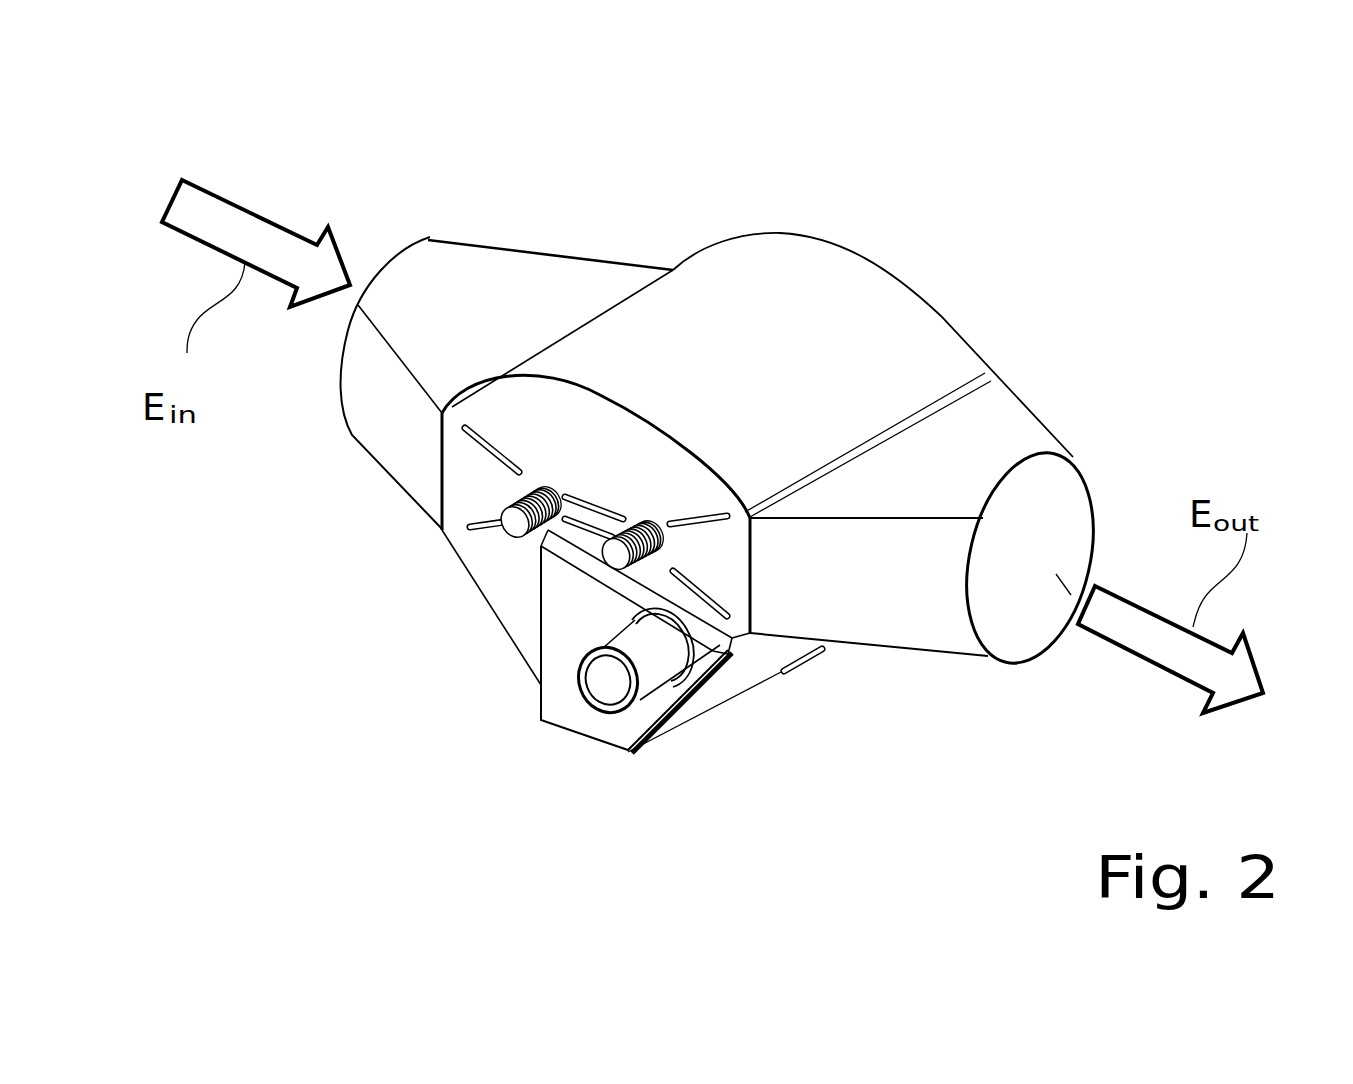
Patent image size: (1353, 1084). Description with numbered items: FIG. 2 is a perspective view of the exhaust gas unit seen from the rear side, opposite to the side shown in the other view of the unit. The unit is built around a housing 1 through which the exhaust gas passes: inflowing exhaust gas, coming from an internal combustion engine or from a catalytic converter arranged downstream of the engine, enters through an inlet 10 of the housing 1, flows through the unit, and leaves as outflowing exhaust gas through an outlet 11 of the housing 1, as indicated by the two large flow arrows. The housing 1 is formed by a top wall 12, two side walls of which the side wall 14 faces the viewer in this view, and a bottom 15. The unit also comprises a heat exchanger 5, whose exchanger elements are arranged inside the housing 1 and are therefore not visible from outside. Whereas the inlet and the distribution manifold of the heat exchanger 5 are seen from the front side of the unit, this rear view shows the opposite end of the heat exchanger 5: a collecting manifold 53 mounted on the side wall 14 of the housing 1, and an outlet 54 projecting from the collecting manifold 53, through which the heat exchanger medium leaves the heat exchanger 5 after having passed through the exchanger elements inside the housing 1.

The housing 1 is at (742, 499).
The inlet 10 is at (433, 290).
The outlet 11 is at (1008, 433).
The top wall 12 is at (828, 393).
The side wall 14 is at (635, 458).
The bottom 15 is at (750, 662).
The heat exchanger 5 is at (537, 719).
The collecting manifold 53 is at (557, 647).
The outlet 54 is at (662, 662).